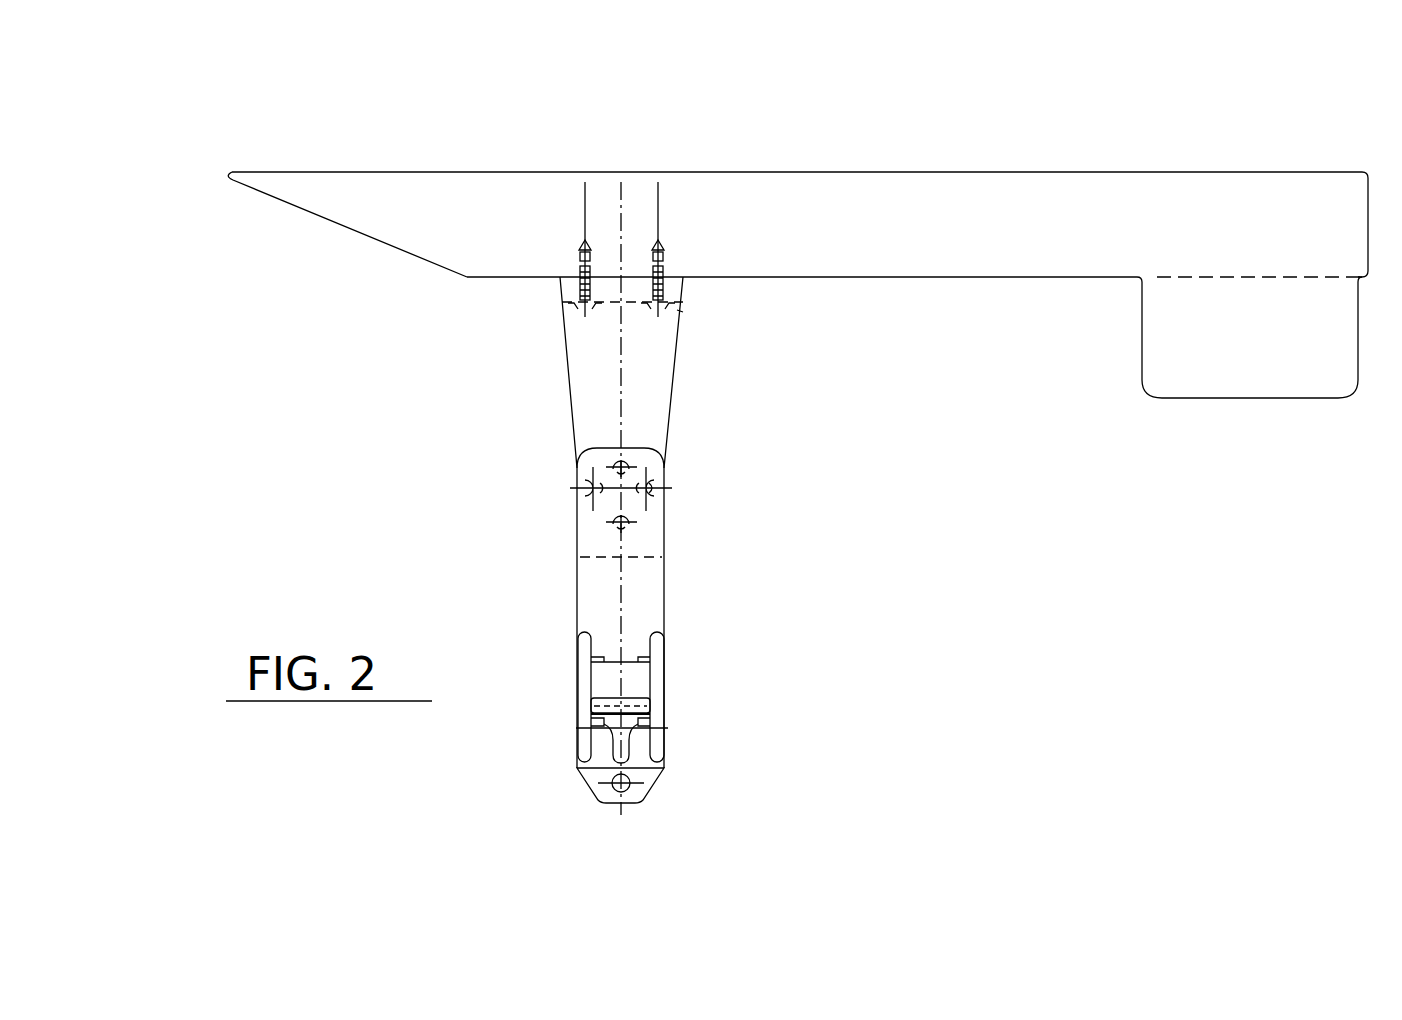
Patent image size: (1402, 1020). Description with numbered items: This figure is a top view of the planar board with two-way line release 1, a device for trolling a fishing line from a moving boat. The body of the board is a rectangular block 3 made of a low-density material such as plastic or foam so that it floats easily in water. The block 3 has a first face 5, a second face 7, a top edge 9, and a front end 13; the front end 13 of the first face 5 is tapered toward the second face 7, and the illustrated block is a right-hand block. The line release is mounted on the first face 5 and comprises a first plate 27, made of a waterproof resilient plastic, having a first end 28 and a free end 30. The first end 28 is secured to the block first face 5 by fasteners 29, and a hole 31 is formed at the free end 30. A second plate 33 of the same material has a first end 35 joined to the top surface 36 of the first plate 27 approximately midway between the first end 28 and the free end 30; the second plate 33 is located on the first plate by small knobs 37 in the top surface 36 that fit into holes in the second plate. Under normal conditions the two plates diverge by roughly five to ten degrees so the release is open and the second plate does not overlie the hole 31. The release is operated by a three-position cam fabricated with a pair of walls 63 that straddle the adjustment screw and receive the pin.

The planar board with two-way line release 1 is at (841, 277).
The rectangular block 3 is at (893, 277).
The first face 5 is at (977, 277).
The second face 7 is at (452, 171).
The top edge 9 is at (921, 242).
The front end 13 is at (225, 171).
The first plate 27 is at (571, 376).
The first end 28 is at (562, 290).
The fasteners 29 is at (665, 305).
The free end 30 is at (608, 803).
The hole 31 is at (623, 792).
The second plate 33 is at (579, 587).
The first end 35 is at (630, 448).
The top surface 36 is at (655, 353).
The small knobs 37 is at (665, 497).
The cam walls 63 is at (643, 662).